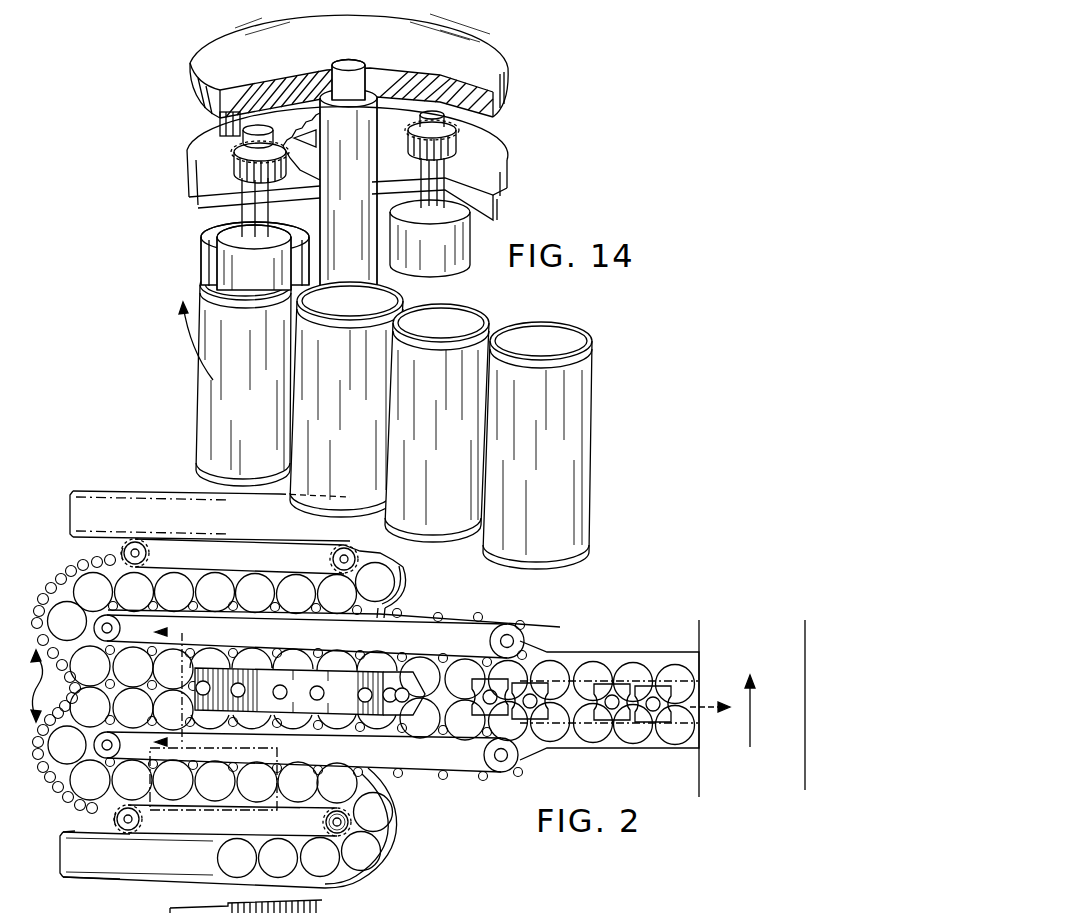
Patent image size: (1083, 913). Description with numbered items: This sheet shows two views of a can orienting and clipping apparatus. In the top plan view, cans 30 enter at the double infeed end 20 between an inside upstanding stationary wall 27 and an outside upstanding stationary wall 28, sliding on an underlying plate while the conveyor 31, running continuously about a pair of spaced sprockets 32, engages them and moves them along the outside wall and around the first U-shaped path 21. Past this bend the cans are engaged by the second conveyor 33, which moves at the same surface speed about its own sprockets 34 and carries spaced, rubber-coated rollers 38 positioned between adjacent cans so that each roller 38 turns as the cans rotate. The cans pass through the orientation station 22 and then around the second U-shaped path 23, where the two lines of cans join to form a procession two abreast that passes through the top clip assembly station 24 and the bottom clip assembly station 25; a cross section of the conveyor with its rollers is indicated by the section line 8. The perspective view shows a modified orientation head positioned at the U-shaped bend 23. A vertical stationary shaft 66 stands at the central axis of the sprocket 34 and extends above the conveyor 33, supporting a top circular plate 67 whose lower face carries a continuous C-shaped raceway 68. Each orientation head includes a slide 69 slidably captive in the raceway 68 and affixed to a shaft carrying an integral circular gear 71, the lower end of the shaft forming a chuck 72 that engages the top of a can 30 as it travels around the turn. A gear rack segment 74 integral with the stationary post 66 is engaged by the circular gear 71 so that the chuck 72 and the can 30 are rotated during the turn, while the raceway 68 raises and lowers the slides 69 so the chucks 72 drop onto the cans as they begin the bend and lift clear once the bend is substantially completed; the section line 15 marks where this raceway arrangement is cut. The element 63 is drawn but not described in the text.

In FIG. 2, the section line 8 is at (188, 688).
In FIG. 14, the section line 15 is at (215, 100).
In FIG. 2, the double infeed end 20 is at (68, 507).
In FIG. 2, the U-shaped path 21 is at (413, 575).
In FIG. 2, the orientation station 22 is at (204, 563).
In FIG. 2, the second U-shaped path 23 is at (45, 695).
In FIG. 2, the top clip assembly station 24 is at (383, 671).
In FIG. 2, the bottom clip assembly station 25 is at (588, 676).
In FIG. 2, the inside upstanding stationary wall 27 is at (82, 831).
In FIG. 2, the outside upstanding stationary wall 28 is at (111, 879).
In FIG. 14, the cans 30 is at (267, 374).
In FIG. 2, the conveyor 31 is at (268, 824).
In FIG. 2, the sprockets 32 is at (350, 821).
In FIG. 2, the second conveyor 33 is at (467, 769).
In FIG. 2, the sprockets 34 is at (97, 753).
In FIG. 2, the roller 38 is at (406, 719).
In FIG. 2, the hatched support 63 is at (282, 901).
In FIG. 14, the vertical stationary shaft 66 is at (352, 112).
In FIG. 14, the top circular plate 67 is at (478, 58).
In FIG. 14, the raceway 68 is at (238, 133).
In FIG. 14, the slide 69 is at (262, 126).
In FIG. 14, the circular gear 71 is at (240, 161).
In FIG. 14, the chuck 72 is at (236, 262).
In FIG. 14, the gear rack segment 74 is at (405, 168).